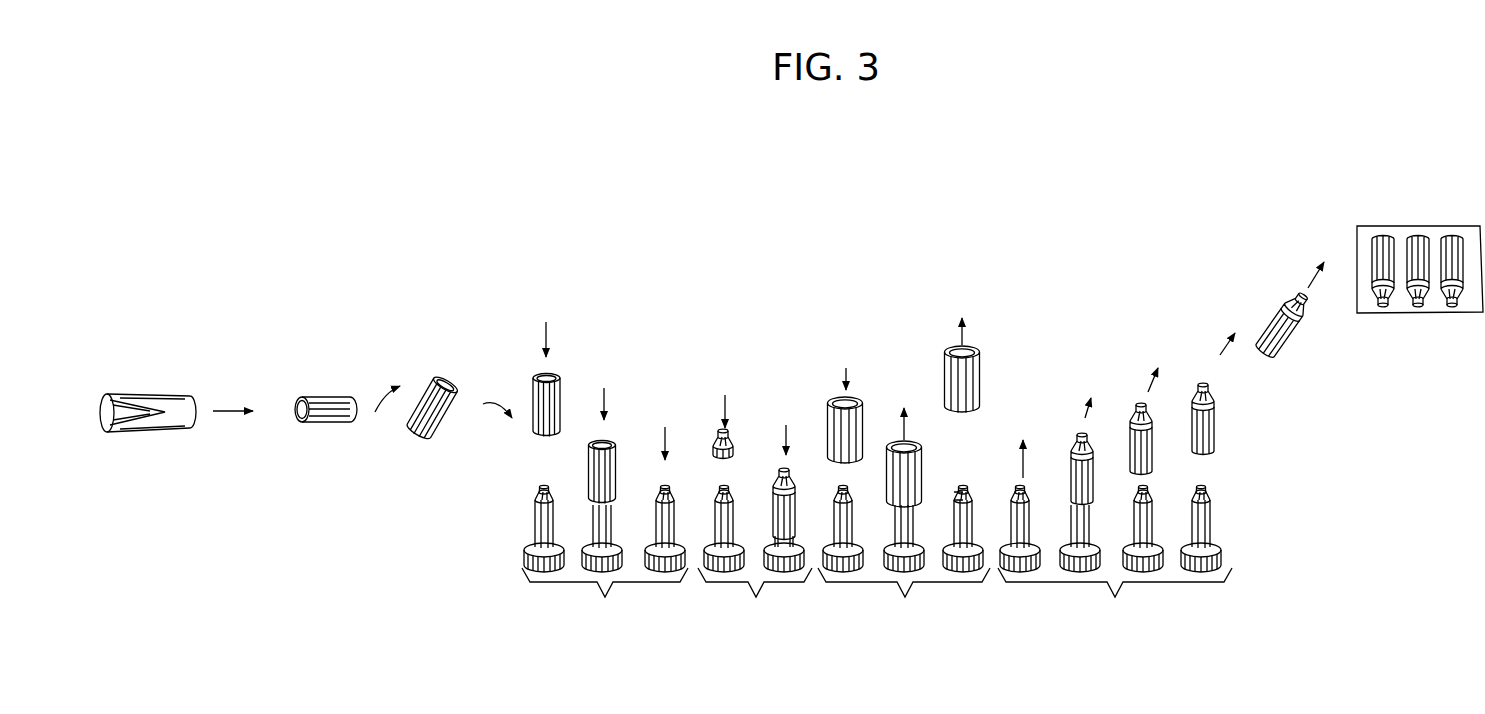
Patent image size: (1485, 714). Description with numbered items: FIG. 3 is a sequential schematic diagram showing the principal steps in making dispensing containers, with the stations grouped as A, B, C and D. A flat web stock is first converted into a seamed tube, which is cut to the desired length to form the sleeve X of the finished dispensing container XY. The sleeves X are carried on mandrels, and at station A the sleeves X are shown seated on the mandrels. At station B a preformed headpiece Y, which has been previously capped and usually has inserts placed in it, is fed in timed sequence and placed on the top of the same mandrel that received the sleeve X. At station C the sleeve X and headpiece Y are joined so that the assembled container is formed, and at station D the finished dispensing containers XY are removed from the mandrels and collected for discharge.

The sleeve X is at (331, 425).
The headpiece Y is at (742, 451).
The finished dispensing container XY is at (975, 497).
The station A is at (605, 554).
The station B is at (755, 554).
The station C is at (904, 470).
The station D is at (1115, 531).